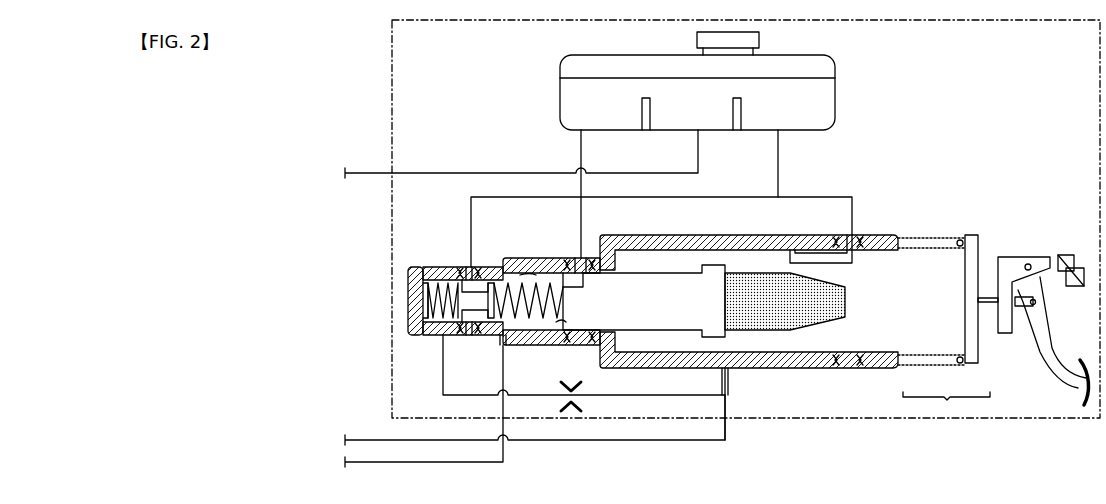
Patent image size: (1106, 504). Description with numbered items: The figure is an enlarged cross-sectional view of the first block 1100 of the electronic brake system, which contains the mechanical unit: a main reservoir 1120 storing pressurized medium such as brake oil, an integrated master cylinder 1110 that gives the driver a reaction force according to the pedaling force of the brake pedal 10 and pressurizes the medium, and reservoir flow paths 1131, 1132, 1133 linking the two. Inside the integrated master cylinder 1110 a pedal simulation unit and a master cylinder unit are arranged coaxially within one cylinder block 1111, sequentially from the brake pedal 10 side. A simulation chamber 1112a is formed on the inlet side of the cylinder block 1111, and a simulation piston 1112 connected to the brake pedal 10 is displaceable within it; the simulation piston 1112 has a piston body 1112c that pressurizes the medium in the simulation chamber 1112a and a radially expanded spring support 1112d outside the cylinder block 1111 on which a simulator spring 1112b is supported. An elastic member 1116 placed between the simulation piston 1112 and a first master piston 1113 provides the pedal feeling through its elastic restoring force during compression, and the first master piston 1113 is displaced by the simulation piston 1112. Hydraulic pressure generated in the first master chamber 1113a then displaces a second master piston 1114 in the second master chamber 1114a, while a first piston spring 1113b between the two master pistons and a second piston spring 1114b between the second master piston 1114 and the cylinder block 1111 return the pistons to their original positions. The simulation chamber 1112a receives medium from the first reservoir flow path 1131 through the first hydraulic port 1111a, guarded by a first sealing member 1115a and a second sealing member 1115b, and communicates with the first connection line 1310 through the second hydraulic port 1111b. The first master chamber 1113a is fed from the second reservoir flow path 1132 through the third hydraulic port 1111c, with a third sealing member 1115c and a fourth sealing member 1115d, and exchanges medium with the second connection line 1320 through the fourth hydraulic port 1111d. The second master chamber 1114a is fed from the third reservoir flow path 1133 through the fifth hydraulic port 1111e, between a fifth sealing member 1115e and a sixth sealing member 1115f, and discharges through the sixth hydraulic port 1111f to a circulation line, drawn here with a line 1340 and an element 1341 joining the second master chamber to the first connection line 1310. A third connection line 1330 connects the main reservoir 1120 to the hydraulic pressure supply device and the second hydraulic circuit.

The brake pedal 10 is at (1050, 318).
The first block 1100 is at (392, 48).
The integrated master cylinder 1110 is at (717, 285).
The cylinder block 1111 is at (415, 303).
The first hydraulic port 1111a is at (852, 232).
The second hydraulic port 1111b is at (727, 372).
The third hydraulic port 1111c is at (580, 256).
The fourth hydraulic port 1111d is at (512, 346).
The fifth hydraulic port 1111e is at (468, 265).
The sixth hydraulic port 1111f is at (458, 338).
The simulation piston 1112 is at (892, 307).
The simulation chamber 1112a is at (795, 366).
The simulator spring 1112b is at (961, 241).
The piston body 1112c is at (922, 340).
The spring support 1112d is at (972, 364).
The first master piston 1113 is at (665, 280).
The first master chamber 1113a is at (528, 274).
The first piston spring 1113b is at (562, 322).
The second master piston 1114 is at (470, 318).
The second master chamber 1114a is at (422, 318).
The second piston spring 1114b is at (415, 268).
The first sealing member 1115a is at (836, 238).
The second sealing member 1115b is at (862, 240).
The third sealing member 1115c is at (566, 262).
The fourth sealing member 1115d is at (592, 259).
The fifth sealing member 1115e is at (460, 268).
The sixth sealing member 1115f is at (479, 268).
The elastic member 1116 is at (752, 275).
The main reservoir 1120 is at (840, 72).
The first reservoir flow path 1131 is at (812, 197).
The second reservoir flow path 1132 is at (578, 148).
The third reservoir flow path 1133 is at (471, 208).
The first connection line 1310 is at (720, 442).
The second connection line 1320 is at (445, 463).
The third connection line 1330 is at (347, 170).
The fourth hydraulic line 1340 is at (535, 398).
The check valve 1341 is at (571, 412).